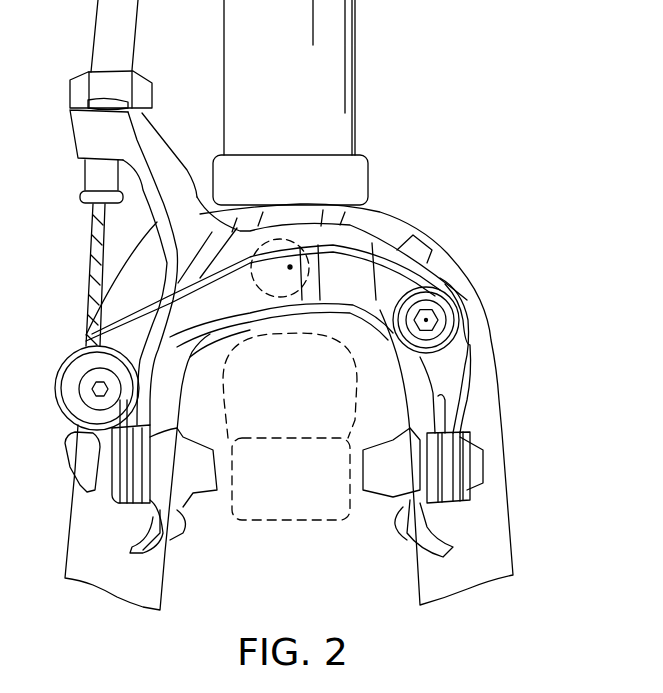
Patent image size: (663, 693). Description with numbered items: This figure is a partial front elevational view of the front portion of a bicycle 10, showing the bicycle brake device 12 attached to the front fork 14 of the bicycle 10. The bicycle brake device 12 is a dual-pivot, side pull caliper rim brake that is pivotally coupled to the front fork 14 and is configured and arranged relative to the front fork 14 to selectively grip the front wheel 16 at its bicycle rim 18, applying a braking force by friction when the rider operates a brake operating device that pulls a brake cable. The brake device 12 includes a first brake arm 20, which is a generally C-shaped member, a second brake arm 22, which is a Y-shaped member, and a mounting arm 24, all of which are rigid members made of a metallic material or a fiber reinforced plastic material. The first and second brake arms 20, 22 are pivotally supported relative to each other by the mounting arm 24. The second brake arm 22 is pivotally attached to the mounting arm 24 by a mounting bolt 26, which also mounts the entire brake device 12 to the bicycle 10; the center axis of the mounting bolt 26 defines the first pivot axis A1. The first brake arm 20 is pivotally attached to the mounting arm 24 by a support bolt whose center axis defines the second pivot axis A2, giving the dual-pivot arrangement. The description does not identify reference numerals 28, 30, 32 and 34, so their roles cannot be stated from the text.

The bicycle 10 is at (498, 128).
The bicycle brake device 12 is at (385, 222).
The front fork 14 is at (435, 213).
The front wheel 16 is at (263, 268).
The bicycle rim 18 is at (262, 522).
The first brake arm 20 is at (471, 365).
The second brake arm 22 is at (255, 205).
The mounting arm 24 is at (325, 213).
The mounting bolt 26 is at (283, 216).
The arch inner edge 28 is at (281, 330).
The cable adjuster 30 is at (103, 215).
The left brake pad 32 is at (141, 476).
The right brake pad 34 is at (423, 492).
The first pivot axis A1 is at (292, 267).
The second pivot axis A2 is at (427, 319).